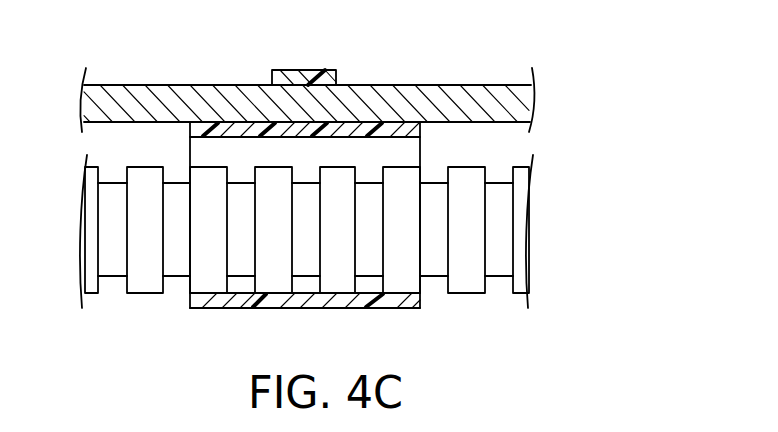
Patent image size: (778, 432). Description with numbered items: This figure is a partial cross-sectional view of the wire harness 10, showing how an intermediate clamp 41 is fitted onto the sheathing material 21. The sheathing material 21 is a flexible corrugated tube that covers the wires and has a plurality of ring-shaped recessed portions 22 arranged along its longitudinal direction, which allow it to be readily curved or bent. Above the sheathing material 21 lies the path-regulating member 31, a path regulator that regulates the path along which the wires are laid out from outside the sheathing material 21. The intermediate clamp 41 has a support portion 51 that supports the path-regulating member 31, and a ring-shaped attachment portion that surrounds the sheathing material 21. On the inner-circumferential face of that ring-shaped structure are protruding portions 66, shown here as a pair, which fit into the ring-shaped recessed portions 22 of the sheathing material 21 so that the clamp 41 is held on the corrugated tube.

The wire harness 10 is at (138, 57).
The sheathing material 21 is at (473, 294).
The ring-shaped recessed portions 22 is at (252, 278).
The path-regulating member 31 is at (438, 84).
The intermediate clamp 41 is at (214, 308).
The support portion 51 is at (303, 70).
The protruding portions 66 is at (258, 283).